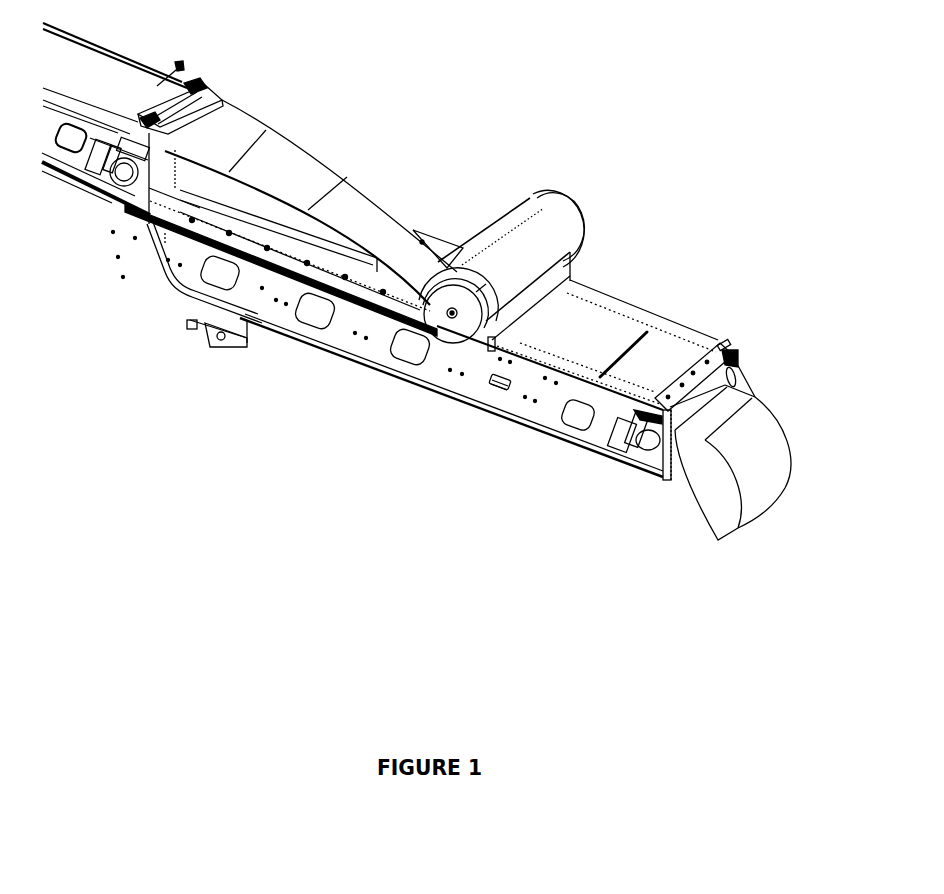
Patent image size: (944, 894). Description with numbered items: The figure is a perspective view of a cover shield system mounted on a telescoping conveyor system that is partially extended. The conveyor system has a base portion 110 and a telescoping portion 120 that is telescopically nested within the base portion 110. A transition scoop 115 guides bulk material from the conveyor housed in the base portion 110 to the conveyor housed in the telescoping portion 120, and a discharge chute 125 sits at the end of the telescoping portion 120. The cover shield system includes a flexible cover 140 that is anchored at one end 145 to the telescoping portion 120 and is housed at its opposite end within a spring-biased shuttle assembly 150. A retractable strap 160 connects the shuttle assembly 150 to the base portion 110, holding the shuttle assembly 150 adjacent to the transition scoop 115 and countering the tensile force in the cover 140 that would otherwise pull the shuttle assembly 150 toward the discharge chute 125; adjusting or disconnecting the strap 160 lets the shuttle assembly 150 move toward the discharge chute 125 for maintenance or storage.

The base portion 110 is at (94, 256).
The transition scoop 115 is at (318, 149).
The telescoping portion 120 is at (467, 380).
The discharge chute 125 is at (686, 524).
The flexible cover 140 is at (609, 316).
The one end 145 is at (739, 333).
The shuttle assembly 150 is at (583, 187).
The strap 160 is at (145, 239).